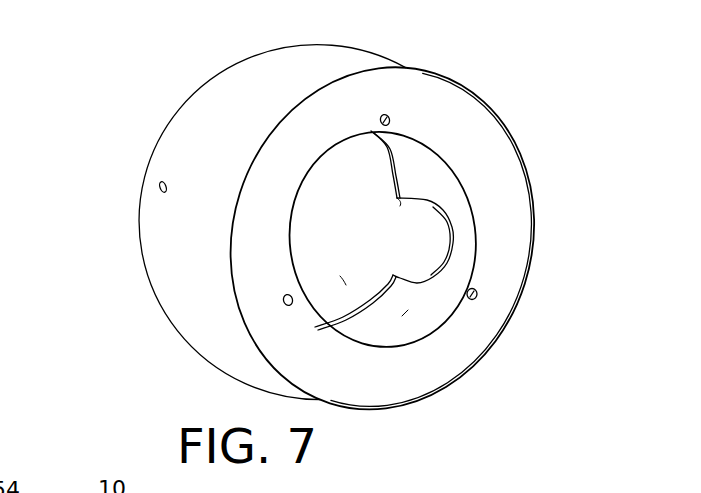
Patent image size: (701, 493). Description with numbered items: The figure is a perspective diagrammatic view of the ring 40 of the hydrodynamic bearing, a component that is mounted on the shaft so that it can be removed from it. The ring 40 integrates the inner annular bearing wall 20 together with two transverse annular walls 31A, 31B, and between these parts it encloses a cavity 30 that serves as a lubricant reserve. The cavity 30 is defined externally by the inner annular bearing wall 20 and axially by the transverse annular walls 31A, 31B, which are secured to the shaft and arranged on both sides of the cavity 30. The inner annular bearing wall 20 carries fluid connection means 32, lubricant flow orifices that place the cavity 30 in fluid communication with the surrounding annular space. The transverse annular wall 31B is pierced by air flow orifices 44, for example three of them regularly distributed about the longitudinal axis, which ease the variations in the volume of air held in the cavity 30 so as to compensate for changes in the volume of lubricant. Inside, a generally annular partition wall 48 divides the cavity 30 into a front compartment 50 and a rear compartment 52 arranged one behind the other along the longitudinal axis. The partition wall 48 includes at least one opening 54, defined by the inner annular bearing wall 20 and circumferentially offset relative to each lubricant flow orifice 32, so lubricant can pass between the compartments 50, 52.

The inner annular bearing wall 20 is at (210, 337).
The cavity 30 is at (388, 383).
The transverse annular wall 31A is at (388, 206).
The transverse annular wall 31B is at (452, 370).
The fluid connection means 32 is at (158, 187).
The ring 40 is at (505, 83).
The air flow orifices 44 is at (388, 114).
The partition wall 48 is at (417, 153).
The front compartment 50 is at (346, 285).
The rear compartment 52 is at (408, 310).
The opening 54 is at (443, 223).